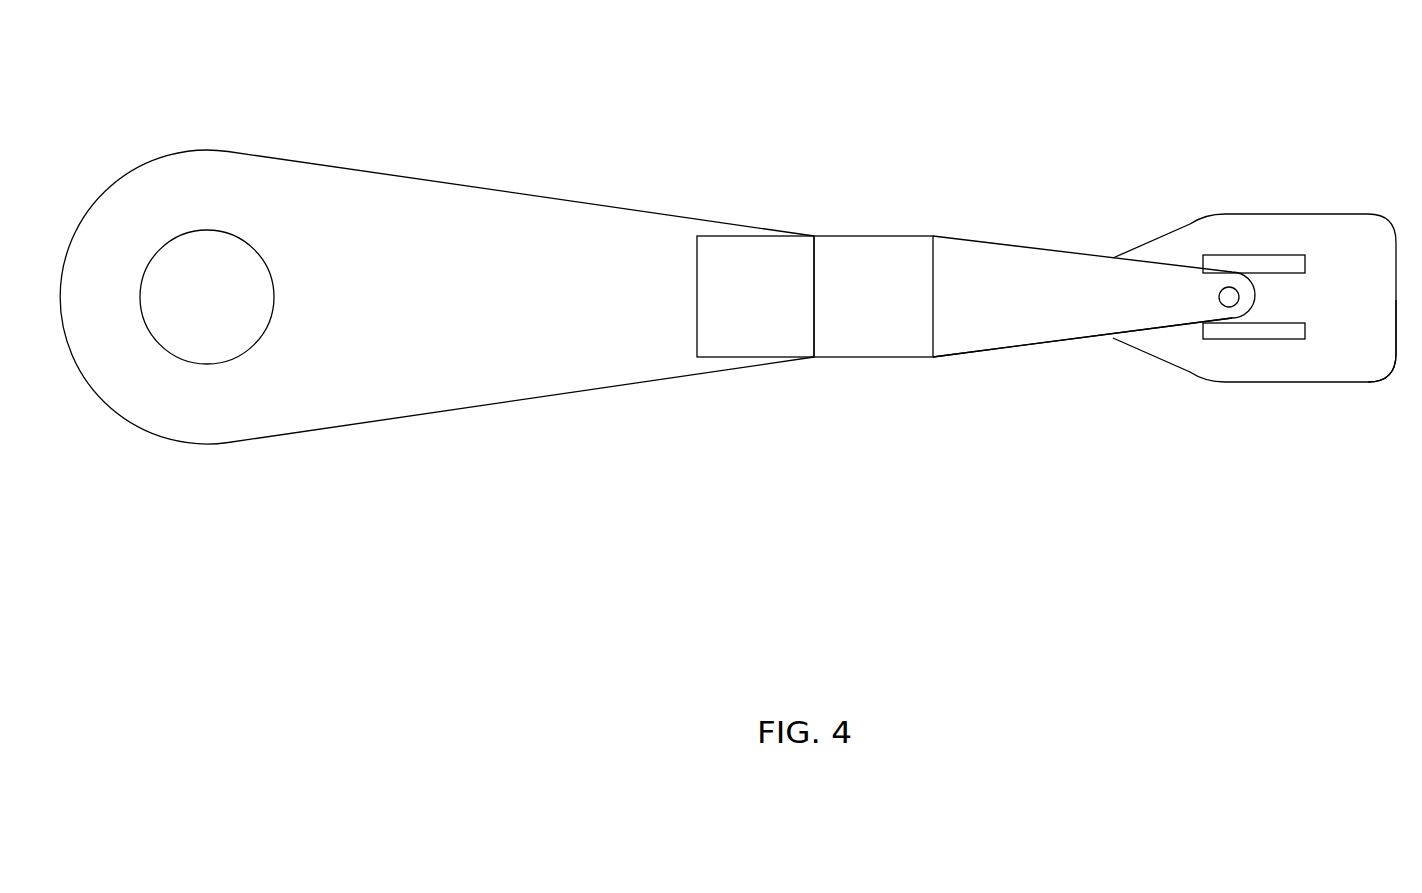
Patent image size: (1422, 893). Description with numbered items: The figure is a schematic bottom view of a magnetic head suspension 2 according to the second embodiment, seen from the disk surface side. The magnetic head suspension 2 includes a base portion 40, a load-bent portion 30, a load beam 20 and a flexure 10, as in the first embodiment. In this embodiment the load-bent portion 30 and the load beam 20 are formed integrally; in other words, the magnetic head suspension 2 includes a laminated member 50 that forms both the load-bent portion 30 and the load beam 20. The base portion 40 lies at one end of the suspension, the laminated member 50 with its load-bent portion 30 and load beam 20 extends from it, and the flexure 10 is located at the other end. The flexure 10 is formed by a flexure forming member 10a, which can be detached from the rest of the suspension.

The magnetic head suspension 2 is at (922, 152).
The base portion 40 is at (448, 143).
The load-bent portion 30 is at (877, 220).
The load beam 20 is at (1030, 233).
The laminated member 50 is at (1006, 327).
The flexure 10 is at (1288, 196).
The flexure forming member 10a is at (1368, 347).